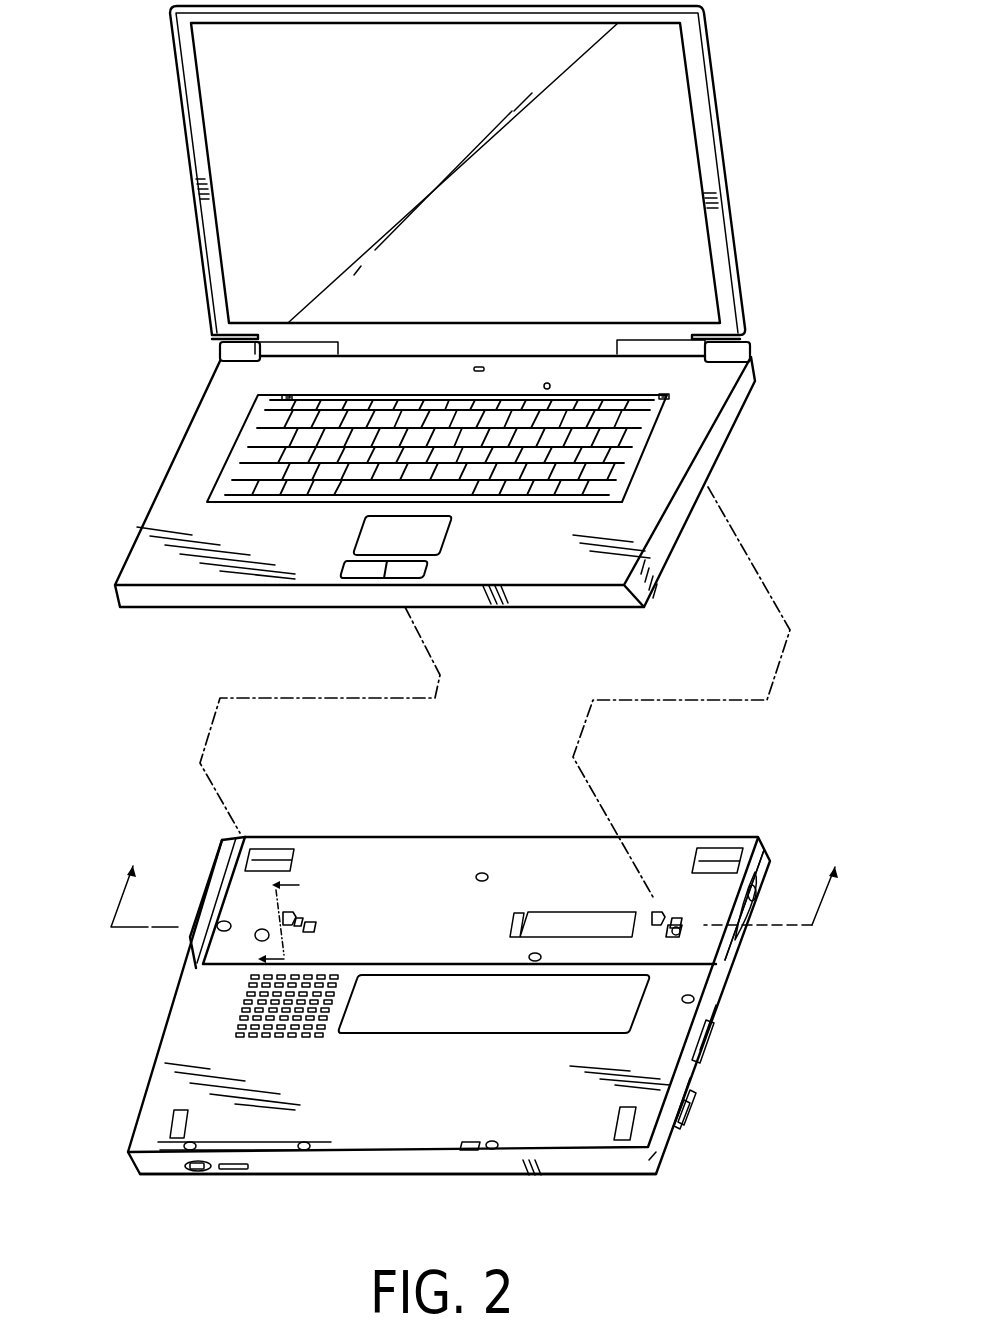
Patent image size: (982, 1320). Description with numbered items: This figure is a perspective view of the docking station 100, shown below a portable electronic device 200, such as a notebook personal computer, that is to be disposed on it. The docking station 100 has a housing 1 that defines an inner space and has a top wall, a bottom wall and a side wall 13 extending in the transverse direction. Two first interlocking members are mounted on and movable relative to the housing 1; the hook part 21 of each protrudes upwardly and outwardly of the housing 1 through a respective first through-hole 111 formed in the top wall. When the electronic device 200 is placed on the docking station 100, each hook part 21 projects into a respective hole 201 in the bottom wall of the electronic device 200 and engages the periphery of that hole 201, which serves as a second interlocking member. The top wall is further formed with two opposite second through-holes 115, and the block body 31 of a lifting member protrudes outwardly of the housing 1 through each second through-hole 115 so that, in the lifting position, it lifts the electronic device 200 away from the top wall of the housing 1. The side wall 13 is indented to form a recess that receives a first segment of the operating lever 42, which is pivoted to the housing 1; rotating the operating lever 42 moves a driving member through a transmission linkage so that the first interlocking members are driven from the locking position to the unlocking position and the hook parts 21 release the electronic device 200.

The housing 1 is at (570, 1180).
The docking station 100 is at (179, 854).
The portable electronic device 200 is at (183, 354).
The hole 201 is at (267, 397).
The hook part 21 is at (283, 917).
The block body 31 is at (302, 921).
The second through-hole 115 is at (316, 926).
The first through-hole 111 is at (266, 931).
The side wall 13 is at (712, 992).
The operating lever 42 is at (684, 1106).